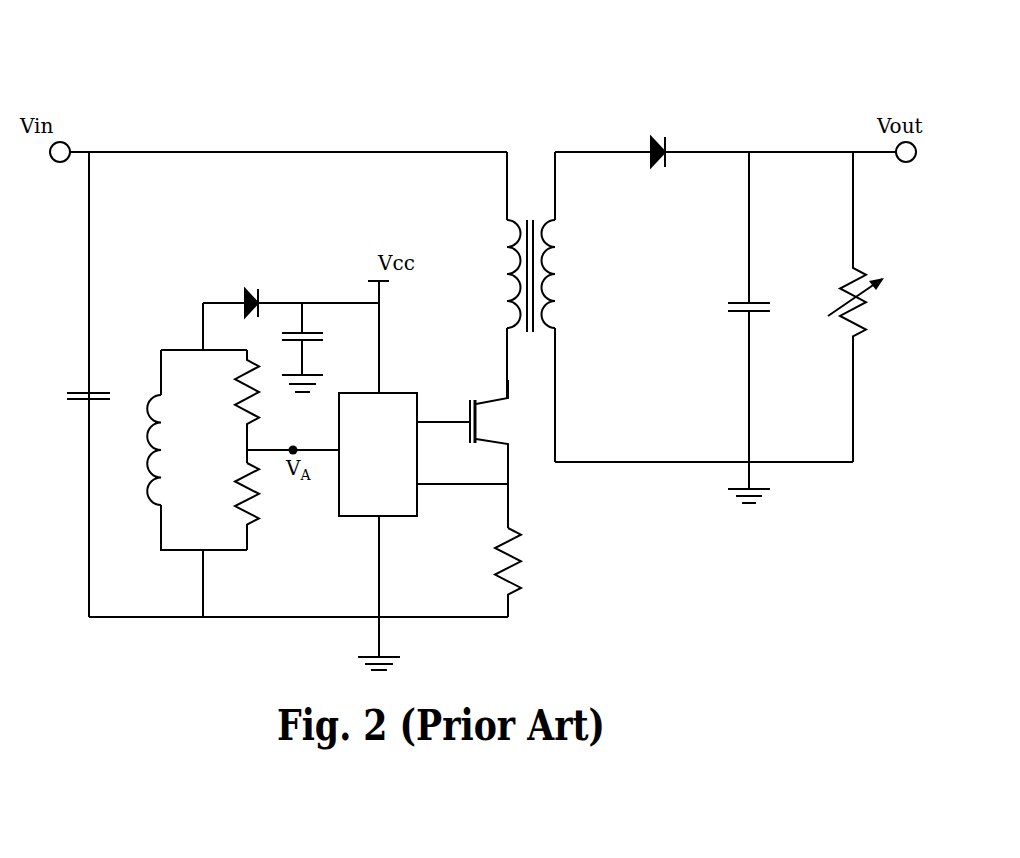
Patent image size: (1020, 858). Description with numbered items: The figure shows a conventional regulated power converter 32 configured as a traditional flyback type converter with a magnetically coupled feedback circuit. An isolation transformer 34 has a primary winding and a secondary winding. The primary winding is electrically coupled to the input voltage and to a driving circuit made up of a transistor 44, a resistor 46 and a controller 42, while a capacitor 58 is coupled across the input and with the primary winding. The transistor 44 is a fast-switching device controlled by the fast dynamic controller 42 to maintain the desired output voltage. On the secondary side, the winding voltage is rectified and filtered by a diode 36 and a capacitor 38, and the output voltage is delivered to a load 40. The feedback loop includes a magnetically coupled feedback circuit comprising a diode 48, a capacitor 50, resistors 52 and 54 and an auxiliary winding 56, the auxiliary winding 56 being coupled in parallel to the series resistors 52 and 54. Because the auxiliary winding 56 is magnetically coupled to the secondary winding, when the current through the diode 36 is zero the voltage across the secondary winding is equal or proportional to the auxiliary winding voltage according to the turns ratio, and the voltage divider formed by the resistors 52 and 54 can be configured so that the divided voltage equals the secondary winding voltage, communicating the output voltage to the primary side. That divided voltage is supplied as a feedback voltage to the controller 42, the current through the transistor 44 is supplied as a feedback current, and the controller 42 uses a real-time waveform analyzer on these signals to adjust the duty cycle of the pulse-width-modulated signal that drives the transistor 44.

The power converter 32 is at (703, 58).
The isolation transformer 34 is at (524, 178).
The diode 36 is at (660, 135).
The capacitor 38 is at (760, 302).
The load 40 is at (862, 306).
The controller 42 is at (397, 393).
The transistor 44 is at (471, 400).
The resistor 46 is at (492, 572).
The diode 48 is at (248, 293).
The capacitor 50 is at (320, 332).
The resistor 52 is at (249, 407).
The resistor 54 is at (256, 512).
The auxiliary winding 56 is at (150, 478).
The capacitor 58 is at (70, 393).